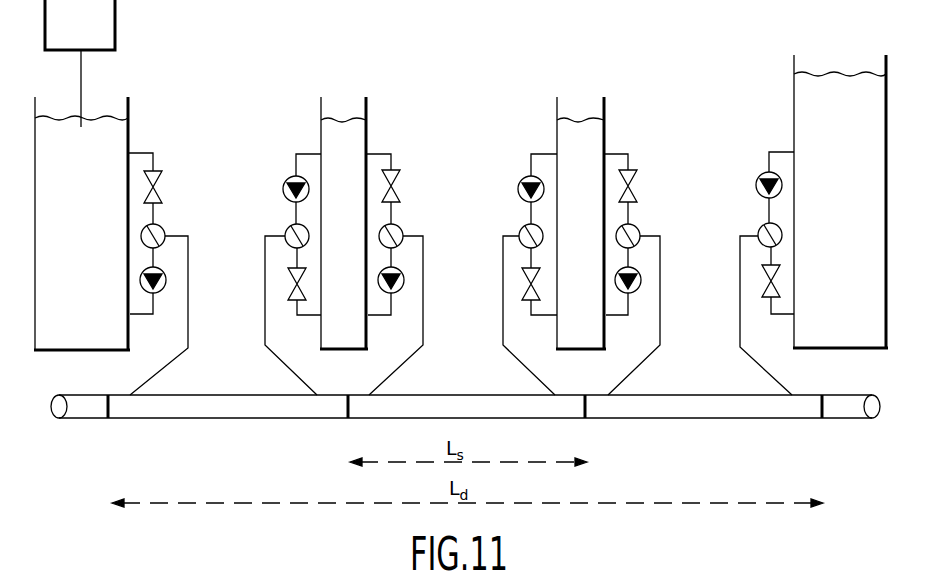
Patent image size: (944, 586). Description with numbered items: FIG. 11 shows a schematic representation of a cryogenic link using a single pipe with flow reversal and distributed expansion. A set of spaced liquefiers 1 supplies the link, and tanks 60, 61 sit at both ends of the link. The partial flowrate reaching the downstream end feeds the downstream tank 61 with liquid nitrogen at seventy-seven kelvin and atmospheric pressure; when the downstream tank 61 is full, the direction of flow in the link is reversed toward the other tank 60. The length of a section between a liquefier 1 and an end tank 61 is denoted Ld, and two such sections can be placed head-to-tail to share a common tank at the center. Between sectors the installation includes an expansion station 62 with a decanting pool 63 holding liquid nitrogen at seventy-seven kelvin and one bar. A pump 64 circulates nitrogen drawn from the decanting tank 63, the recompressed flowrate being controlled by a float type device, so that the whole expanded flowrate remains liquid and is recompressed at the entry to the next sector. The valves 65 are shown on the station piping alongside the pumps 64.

The liquefier 1 is at (115, 10).
The tank 60 is at (108, 118).
The downstream tank 61 is at (815, 112).
The station 62 is at (494, 214).
The decanting pool 63 is at (355, 143).
The pump 64 is at (285, 180).
The valve 65 is at (292, 278).